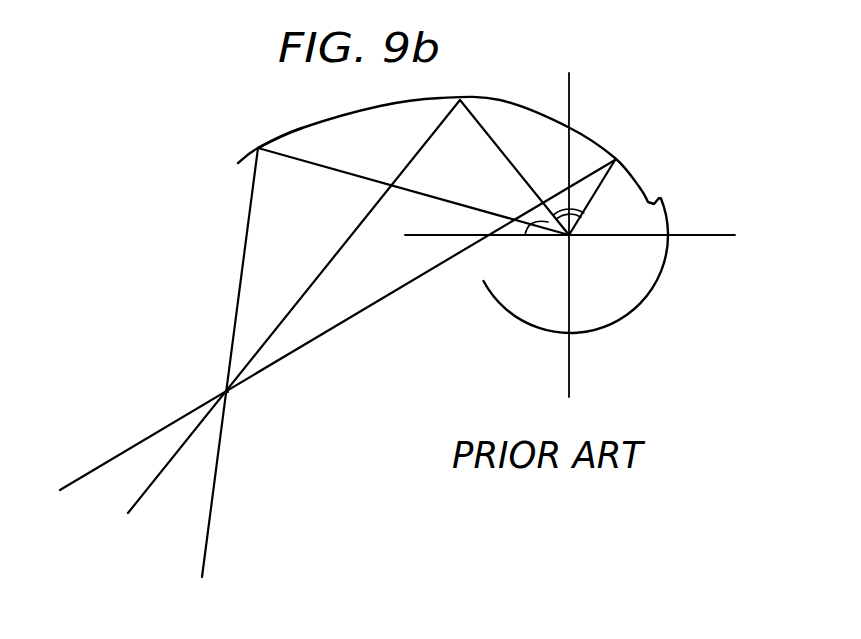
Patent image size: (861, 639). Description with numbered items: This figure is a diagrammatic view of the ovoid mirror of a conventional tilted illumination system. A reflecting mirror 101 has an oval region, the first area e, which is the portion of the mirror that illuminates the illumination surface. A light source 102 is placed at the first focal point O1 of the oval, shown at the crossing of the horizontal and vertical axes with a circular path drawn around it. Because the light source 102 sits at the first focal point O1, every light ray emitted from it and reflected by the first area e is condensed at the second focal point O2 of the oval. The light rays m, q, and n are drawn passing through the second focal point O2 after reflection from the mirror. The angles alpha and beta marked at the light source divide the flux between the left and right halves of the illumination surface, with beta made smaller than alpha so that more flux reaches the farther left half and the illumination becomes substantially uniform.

The reflecting mirror 101 is at (502, 98).
The light source 102 is at (563, 245).
The first focal point O1 is at (575, 240).
The second focal point O2 is at (232, 397).
The oval region (first area) e is at (302, 128).
The light ray n is at (90, 470).
The light ray q is at (148, 488).
The light ray m is at (212, 511).